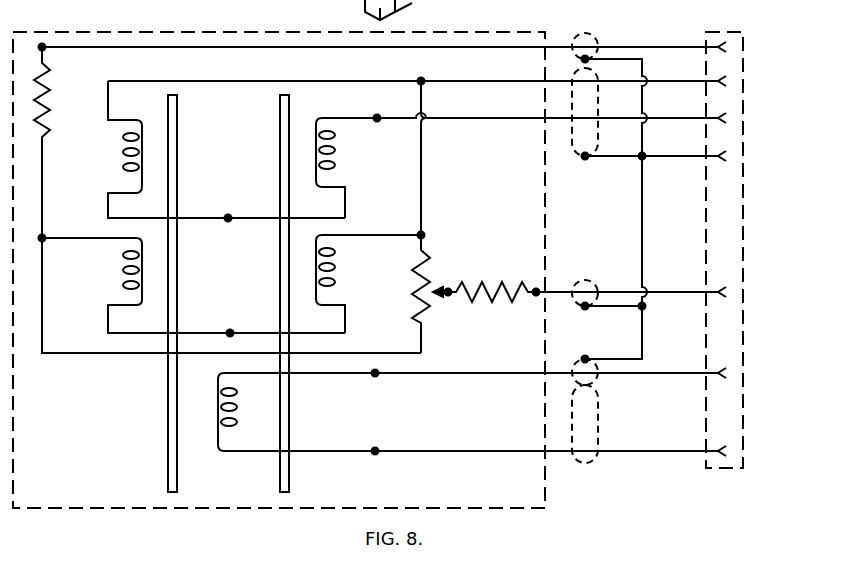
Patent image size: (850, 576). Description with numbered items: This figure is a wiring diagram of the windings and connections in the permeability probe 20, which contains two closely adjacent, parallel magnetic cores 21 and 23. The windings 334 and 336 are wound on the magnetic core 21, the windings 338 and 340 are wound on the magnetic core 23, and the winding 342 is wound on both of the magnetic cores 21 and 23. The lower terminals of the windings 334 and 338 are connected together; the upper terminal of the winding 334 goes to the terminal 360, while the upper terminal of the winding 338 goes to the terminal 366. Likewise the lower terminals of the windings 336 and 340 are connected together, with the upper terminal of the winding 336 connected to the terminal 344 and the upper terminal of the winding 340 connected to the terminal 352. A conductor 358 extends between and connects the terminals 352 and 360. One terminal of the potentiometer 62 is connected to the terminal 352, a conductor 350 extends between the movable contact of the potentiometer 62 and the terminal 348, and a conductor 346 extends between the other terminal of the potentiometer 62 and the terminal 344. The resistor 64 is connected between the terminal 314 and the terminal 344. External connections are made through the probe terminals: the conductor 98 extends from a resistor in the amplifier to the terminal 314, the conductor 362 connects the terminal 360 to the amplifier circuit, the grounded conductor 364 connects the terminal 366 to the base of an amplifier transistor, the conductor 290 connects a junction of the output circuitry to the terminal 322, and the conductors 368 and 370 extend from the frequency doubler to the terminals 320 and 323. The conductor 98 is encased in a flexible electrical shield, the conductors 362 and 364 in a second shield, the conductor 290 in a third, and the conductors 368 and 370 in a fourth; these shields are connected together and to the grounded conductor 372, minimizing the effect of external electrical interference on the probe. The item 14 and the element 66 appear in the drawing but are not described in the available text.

The vehicle 14 is at (430, 9).
The permeability probe 20 is at (104, 513).
The magnetic core 21 is at (178, 158).
The magnetic core 23 is at (279, 126).
The potentiometer 62 is at (430, 266).
The resistor 64 is at (47, 102).
The resistor 66 is at (478, 303).
The conductor 98 is at (727, 46).
The conductor 290 is at (727, 292).
The terminal 314 is at (42, 47).
The terminal 320 is at (375, 375).
The terminal 322 is at (540, 290).
The terminal 323 is at (376, 450).
The winding 334 is at (126, 143).
The winding 336 is at (126, 260).
The winding 338 is at (336, 158).
The winding 340 is at (337, 270).
The winding 342 is at (220, 440).
The terminal 344 is at (44, 237).
The conductor 346 is at (66, 355).
The terminal 348 is at (446, 300).
The conductor 350 is at (450, 290).
The terminal 352 is at (422, 234).
The conductor 358 is at (422, 152).
The terminal 360 is at (421, 80).
The conductor 362 is at (727, 81).
The conductor 364 is at (727, 118).
The terminal 366 is at (377, 116).
The conductor 368 is at (727, 373).
The conductor 370 is at (727, 451).
The grounded conductor 372 is at (727, 156).